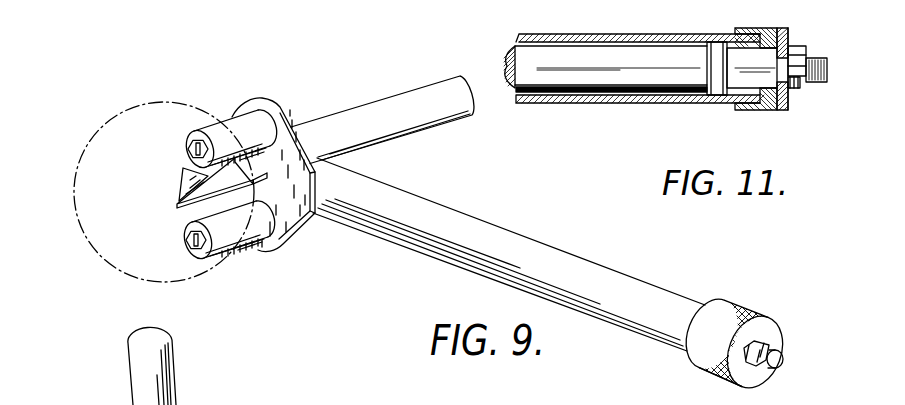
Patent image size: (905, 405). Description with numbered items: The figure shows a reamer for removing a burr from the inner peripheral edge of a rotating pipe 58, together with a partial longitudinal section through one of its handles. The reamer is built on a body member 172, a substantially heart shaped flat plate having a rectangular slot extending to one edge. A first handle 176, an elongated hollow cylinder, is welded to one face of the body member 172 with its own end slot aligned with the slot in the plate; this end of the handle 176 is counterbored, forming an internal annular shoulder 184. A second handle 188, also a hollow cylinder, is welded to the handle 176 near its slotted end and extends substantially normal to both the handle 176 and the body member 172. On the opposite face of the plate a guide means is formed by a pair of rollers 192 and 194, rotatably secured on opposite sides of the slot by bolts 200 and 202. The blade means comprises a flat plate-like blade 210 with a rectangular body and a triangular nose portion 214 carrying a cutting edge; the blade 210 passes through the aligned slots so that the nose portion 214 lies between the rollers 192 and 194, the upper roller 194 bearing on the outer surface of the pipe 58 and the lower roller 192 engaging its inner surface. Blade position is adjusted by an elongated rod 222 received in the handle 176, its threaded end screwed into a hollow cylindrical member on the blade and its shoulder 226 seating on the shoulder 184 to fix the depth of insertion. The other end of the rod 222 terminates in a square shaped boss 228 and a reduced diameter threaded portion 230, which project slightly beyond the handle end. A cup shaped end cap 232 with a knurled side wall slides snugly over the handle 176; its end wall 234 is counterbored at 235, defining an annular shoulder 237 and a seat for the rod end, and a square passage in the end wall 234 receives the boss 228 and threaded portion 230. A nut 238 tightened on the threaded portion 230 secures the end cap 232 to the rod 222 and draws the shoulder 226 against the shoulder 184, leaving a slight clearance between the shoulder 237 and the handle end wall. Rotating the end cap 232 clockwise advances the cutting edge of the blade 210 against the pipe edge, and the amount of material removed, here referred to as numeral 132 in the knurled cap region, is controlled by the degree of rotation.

In FIG. 9, the pipe 58 is at (127, 110).
In FIG. 9, the knurled collar assembly 132 is at (697, 370).
In FIG. 9, the body member 172 is at (297, 217).
In FIG. 9, the handle 176 is at (480, 267).
In FIG. 11, the handle 176 is at (597, 34).
In FIG. 11, the annular shoulder 184 is at (727, 42).
In FIG. 9, the second handle 188 is at (376, 108).
In FIG. 9, the lower guide roller 192 is at (236, 240).
In FIG. 9, the upper guide roller 194 is at (217, 132).
In FIG. 9, the bolt 200 is at (188, 243).
In FIG. 9, the bolt 202 is at (190, 150).
In FIG. 9, the blade 210 is at (180, 201).
In FIG. 9, the nose portion 214 is at (188, 186).
In FIG. 11, the rod 222 is at (613, 72).
In FIG. 11, the shoulder 226 is at (710, 70).
In FIG. 11, the square shaped boss 228 is at (793, 83).
In FIG. 11, the reduced diameter threaded portion 230 is at (818, 77).
In FIG. 9, the end cap 232 is at (733, 302).
In FIG. 11, the end cap 232 is at (765, 45).
In FIG. 9, the end wall 234 is at (762, 326).
In FIG. 11, the end wall 234 is at (787, 100).
In FIG. 11, the counterbore 235 is at (790, 32).
In FIG. 11, the annular shoulder 237 is at (780, 113).
In FIG. 9, the nut 238 is at (778, 352).
In FIG. 11, the nut 238 is at (795, 48).